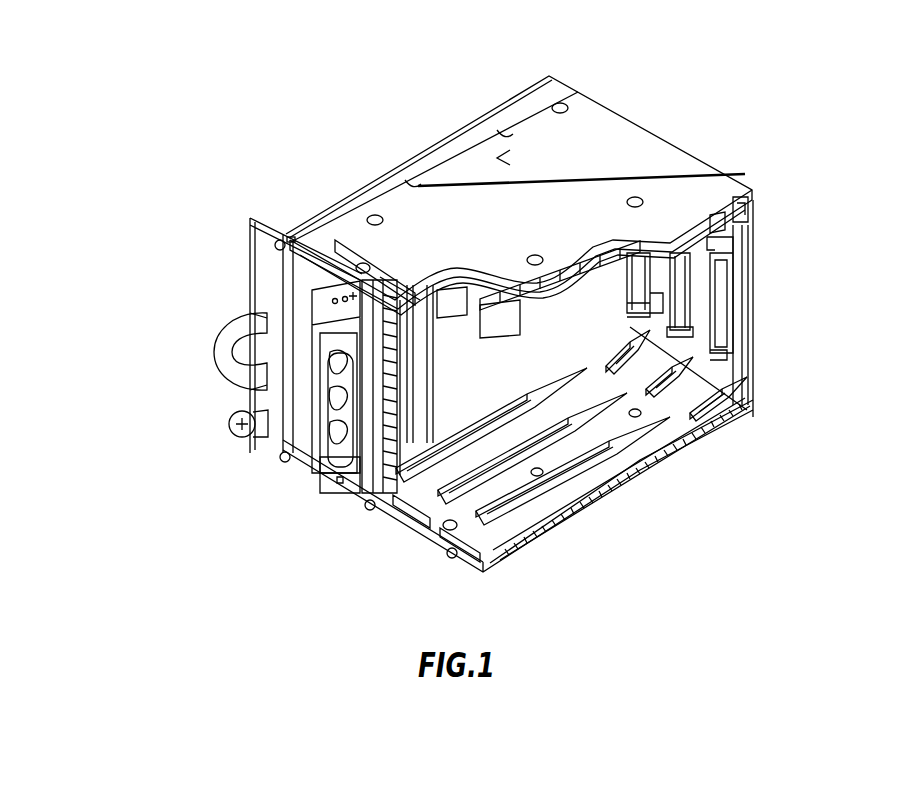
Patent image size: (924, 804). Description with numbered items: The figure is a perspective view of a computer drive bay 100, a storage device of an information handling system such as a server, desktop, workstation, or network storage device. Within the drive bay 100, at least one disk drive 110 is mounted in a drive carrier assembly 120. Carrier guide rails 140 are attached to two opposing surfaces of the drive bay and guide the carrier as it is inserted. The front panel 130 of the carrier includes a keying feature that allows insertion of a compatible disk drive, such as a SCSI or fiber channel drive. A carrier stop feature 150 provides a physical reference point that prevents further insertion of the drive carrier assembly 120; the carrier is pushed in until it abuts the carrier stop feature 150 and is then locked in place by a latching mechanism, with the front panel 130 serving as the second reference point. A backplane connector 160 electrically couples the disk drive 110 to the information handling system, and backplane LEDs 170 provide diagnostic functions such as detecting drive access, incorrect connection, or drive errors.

The computer drive bay 100 is at (371, 137).
The disk drive 110 is at (485, 400).
The drive carrier assembly 120 is at (323, 410).
The front panel 130 is at (390, 508).
The carrier guide rails 140 is at (589, 408).
The carrier stop feature 150 is at (742, 407).
The backplane connector 160 is at (725, 308).
The backplane LEDs 170 is at (742, 212).